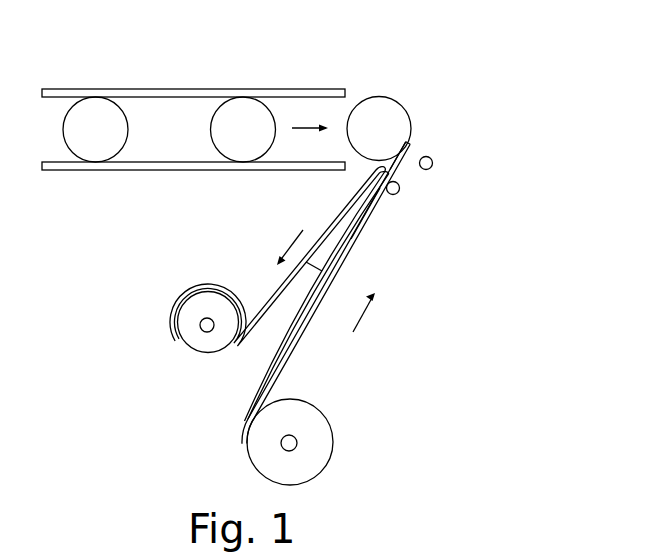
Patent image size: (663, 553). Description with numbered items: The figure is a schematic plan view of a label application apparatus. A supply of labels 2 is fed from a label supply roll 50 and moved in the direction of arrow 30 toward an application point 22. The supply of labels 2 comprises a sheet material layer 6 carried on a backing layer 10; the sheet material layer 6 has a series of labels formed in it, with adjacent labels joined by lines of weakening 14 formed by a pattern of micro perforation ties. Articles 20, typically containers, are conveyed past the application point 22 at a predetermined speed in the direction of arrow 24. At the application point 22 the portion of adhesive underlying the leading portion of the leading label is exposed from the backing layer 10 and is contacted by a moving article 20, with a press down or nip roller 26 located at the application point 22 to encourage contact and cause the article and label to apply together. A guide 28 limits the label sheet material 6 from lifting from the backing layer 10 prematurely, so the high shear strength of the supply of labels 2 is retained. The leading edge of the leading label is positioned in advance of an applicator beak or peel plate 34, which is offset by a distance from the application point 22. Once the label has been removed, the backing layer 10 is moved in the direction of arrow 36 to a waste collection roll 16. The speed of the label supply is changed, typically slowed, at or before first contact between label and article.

The supply of labels 2 is at (302, 337).
The sheet material layer 6 is at (355, 240).
The backing layer 10 is at (281, 285).
The lines of weakening 14 is at (395, 172).
The waste collection roll 16 is at (185, 323).
The articles 20 is at (93, 116).
The application point 22 is at (407, 140).
The arrow 24 is at (297, 128).
The press down or nip roller 26 is at (432, 163).
The guide 28 is at (399, 192).
The arrow 30 is at (372, 322).
The applicator beak or peel plate 34 is at (363, 202).
The arrow 36 is at (288, 237).
The label supply roll 50 is at (312, 448).